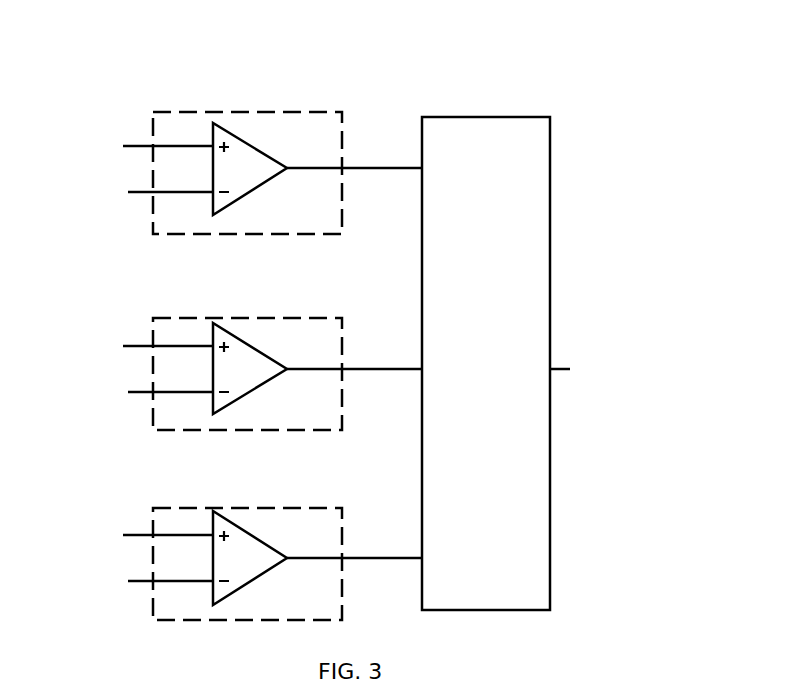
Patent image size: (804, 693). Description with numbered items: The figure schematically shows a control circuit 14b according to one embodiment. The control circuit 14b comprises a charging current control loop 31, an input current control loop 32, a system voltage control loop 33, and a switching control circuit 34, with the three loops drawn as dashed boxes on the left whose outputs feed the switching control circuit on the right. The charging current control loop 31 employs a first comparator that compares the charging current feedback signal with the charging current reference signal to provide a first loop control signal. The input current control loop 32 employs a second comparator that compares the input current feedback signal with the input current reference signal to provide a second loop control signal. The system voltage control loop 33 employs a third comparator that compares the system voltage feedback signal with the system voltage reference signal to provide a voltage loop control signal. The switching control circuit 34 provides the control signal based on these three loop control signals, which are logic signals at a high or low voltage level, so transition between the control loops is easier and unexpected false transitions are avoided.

The control circuit 14b is at (603, 52).
The charging current control loop 31 is at (220, 112).
The input current control loop 32 is at (228, 318).
The system voltage control loop 33 is at (228, 508).
The switching control circuit 34 is at (457, 117).